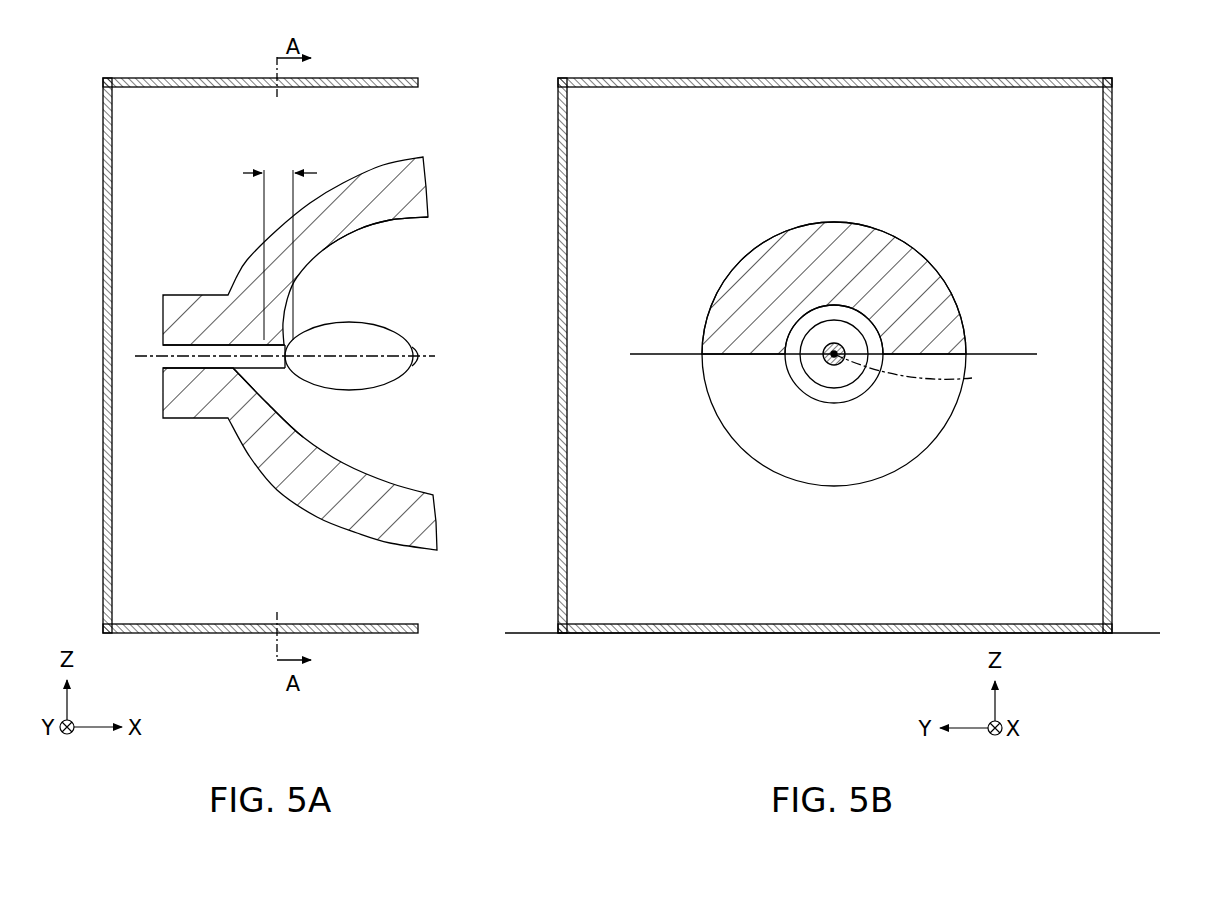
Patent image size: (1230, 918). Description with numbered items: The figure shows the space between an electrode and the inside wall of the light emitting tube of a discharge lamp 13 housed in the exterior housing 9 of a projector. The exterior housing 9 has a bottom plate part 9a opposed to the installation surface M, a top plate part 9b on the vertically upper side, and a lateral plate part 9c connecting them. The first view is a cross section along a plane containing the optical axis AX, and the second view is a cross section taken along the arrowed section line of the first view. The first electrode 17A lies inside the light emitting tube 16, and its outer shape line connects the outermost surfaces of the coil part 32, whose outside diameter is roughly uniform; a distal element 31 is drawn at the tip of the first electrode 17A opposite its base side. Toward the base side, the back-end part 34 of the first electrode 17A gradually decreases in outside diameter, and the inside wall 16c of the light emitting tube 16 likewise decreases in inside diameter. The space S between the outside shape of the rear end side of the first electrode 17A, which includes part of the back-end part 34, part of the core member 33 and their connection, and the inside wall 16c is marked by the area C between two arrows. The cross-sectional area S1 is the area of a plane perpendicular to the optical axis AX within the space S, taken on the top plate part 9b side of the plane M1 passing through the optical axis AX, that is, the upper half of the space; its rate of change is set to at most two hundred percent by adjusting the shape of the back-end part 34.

In FIG. 5A, the exterior housing 9 is at (251, 358).
In FIG. 5B, the exterior housing 9 is at (833, 345).
In FIG. 5A, the bottom plate part 9a is at (147, 633).
In FIG. 5B, the bottom plate part 9a is at (783, 633).
In FIG. 5A, the top plate part 9b is at (223, 78).
In FIG. 5B, the top plate part 9b is at (790, 78).
In FIG. 5A, the lateral plate part 9c is at (103, 112).
In FIG. 5B, the lateral plate part 9c is at (558, 138).
In FIG. 5B, the discharge lamp 13 is at (852, 357).
In FIG. 5A, the light emitting tube 16 is at (300, 340).
In FIG. 5B, the light emitting tube 16 is at (834, 335).
In FIG. 5A, the inside wall 16c is at (350, 236).
In FIG. 5B, the inside wall 16c is at (875, 338).
In FIG. 5A, the first electrode 17A is at (381, 391).
In FIG. 5B, the first electrode 17A is at (836, 405).
In FIG. 5A, the bulb tip 31 is at (416, 378).
In FIG. 5A, the coil part 32 is at (343, 392).
In FIG. 5A, the core member 33 is at (242, 362).
In FIG. 5B, the core member 33 is at (833, 350).
In FIG. 5A, the back-end part 34 is at (300, 455).
In FIG. 5A, the space S is at (278, 328).
In FIG. 5B, the cross-sectional area S1 is at (801, 337).
In FIG. 5A, the area C is at (280, 243).
In FIG. 5A, the optical axis AX is at (432, 356).
In FIG. 5B, the optical axis AX is at (972, 378).
In FIG. 5B, the installation surface M is at (1148, 633).
In FIG. 5B, the plane M1 is at (990, 354).